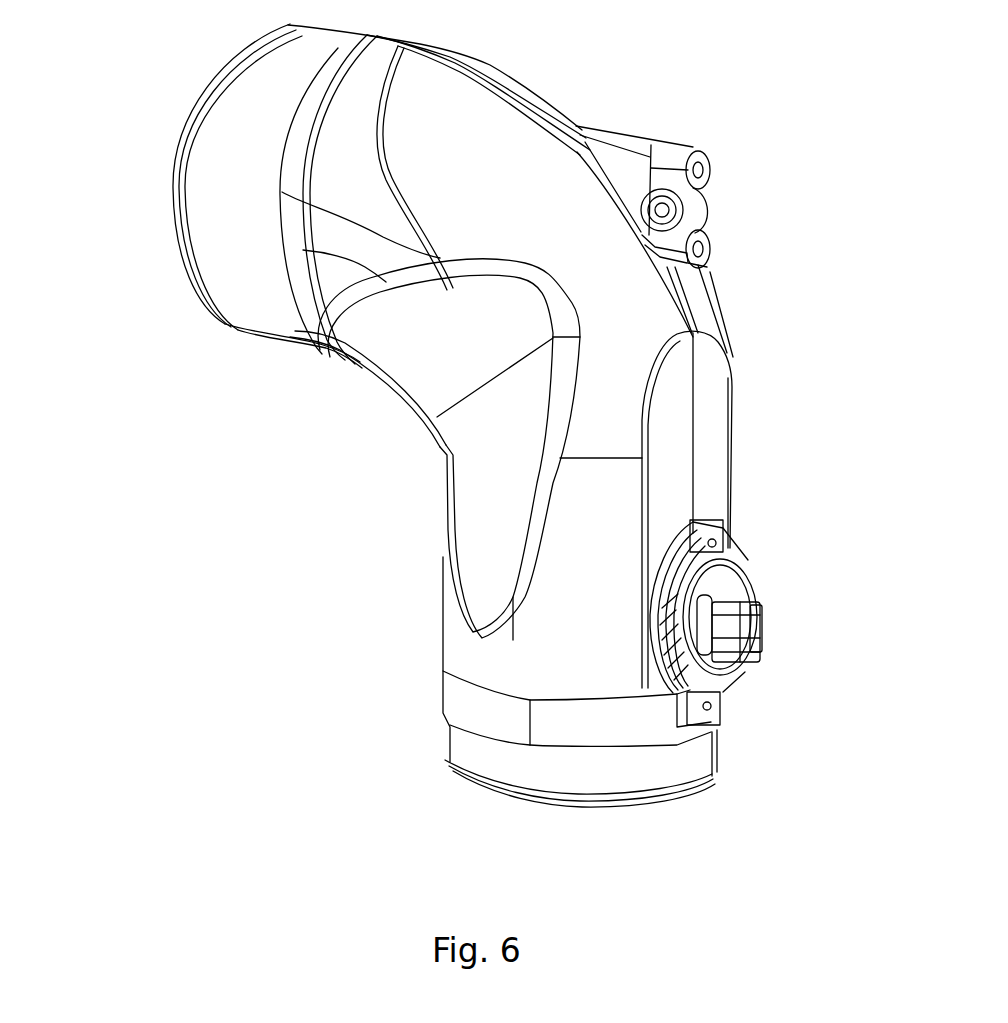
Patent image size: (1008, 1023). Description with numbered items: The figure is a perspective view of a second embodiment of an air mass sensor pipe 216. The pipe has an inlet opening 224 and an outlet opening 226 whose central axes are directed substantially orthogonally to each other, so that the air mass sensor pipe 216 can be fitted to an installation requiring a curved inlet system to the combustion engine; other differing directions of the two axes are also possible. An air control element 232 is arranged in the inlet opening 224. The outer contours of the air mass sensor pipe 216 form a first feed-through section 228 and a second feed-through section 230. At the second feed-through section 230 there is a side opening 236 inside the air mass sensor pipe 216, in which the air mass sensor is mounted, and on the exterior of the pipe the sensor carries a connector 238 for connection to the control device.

The air mass sensor pipe 216 is at (578, 113).
The inlet opening 224 is at (206, 76).
The outlet opening 226 is at (467, 793).
The first feed-through section 228 is at (420, 363).
The second feed-through section 230 is at (703, 487).
The air control element 232 is at (198, 106).
The side opening 236 is at (730, 546).
The connector 238 is at (770, 633).